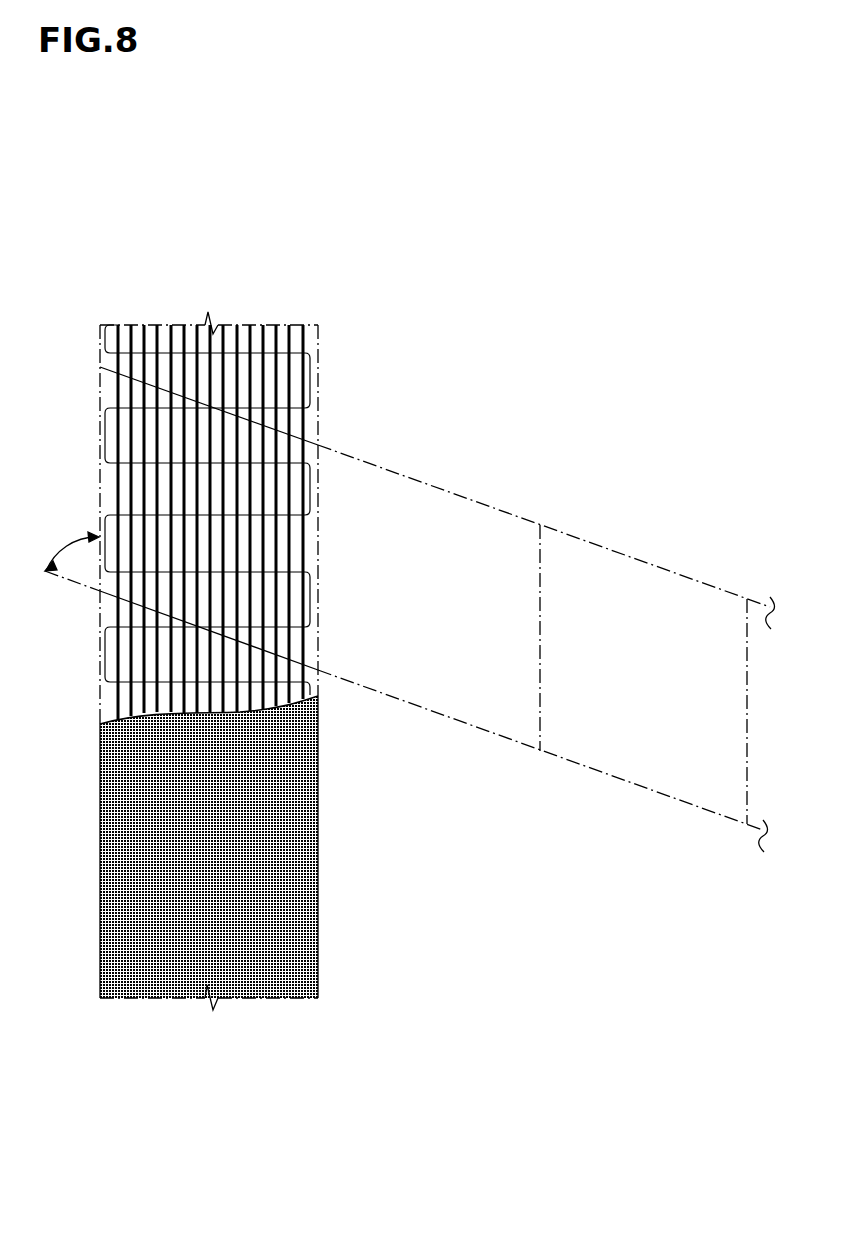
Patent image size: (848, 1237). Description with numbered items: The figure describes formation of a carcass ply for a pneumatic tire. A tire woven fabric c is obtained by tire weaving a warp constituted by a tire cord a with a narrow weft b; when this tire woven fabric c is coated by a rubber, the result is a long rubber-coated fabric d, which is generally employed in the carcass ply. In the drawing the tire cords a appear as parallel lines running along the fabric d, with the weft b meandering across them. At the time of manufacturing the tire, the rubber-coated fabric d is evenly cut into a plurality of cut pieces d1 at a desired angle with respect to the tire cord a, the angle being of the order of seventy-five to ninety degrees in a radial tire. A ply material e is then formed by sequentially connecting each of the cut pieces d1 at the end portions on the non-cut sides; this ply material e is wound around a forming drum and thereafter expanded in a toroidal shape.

The tire cord a is at (300, 333).
The weft b is at (300, 381).
The tire woven fabric c is at (242, 700).
The fabric d is at (331, 933).
The cut pieces d1 is at (470, 724).
The ply material e is at (668, 567).